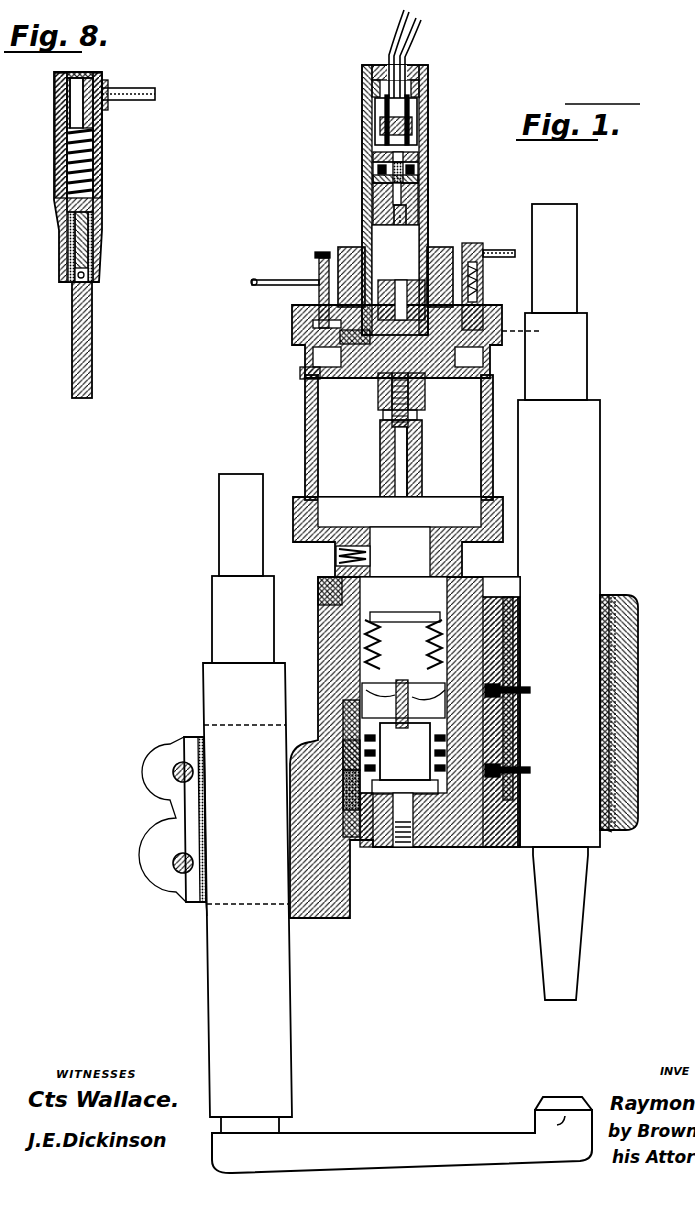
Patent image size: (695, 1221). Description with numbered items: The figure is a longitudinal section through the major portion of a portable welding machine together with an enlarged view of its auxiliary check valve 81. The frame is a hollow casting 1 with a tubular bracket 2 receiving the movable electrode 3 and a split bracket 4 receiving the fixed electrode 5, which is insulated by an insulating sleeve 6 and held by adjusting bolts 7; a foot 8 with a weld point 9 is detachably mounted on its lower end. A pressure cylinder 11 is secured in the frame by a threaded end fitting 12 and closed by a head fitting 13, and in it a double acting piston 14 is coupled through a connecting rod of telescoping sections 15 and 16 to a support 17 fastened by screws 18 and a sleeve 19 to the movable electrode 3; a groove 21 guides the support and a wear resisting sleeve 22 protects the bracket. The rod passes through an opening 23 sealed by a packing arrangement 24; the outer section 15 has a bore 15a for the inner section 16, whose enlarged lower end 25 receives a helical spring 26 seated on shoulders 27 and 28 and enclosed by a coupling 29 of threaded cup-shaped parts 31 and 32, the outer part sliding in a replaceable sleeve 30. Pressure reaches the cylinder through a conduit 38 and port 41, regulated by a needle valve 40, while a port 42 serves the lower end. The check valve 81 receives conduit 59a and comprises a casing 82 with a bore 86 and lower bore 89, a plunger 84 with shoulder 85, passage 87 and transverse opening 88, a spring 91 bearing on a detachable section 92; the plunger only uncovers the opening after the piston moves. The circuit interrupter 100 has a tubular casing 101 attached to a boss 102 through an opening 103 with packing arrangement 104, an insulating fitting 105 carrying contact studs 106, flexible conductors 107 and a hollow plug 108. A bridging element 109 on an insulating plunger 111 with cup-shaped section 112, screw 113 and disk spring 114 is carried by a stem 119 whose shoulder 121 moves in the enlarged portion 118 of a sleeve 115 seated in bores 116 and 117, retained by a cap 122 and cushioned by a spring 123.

In FIG. 1, the hollow casting 1 is at (379, 848).
In FIG. 1, the tubular bracket 2 is at (631, 643).
In FIG. 1, the movable electrode 3 is at (594, 488).
In FIG. 1, the split bracket 4 is at (186, 744).
In FIG. 1, the fixed electrode 5 is at (216, 598).
In FIG. 1, the insulating sleeve 6 is at (203, 911).
In FIG. 1, the adjusting bolts 7 is at (176, 780).
In FIG. 1, the foot 8 is at (408, 1133).
In FIG. 1, the weld point 9 is at (566, 1098).
In FIG. 1, the pressure cylinder 11 is at (305, 419).
In FIG. 1, the threaded end fitting 12 is at (463, 557).
In FIG. 1, the head fitting 13 is at (292, 312).
In FIG. 1, the double acting piston 14 is at (306, 384).
In FIG. 1, the outer section of connecting rod 15 is at (423, 477).
In FIG. 1, the bore 15a is at (418, 452).
In FIG. 1, the inner section of connecting rod 16 is at (423, 495).
In FIG. 1, the support 17 is at (470, 848).
In FIG. 1, the screws 18 is at (519, 766).
In FIG. 1, the sleeve 19 is at (605, 598).
In FIG. 1, the groove 21 is at (500, 600).
In FIG. 1, the wear resisting sleeve 22 is at (607, 833).
In FIG. 1, the opening 23 is at (417, 530).
In FIG. 1, the packing arrangement 24 is at (336, 587).
In FIG. 1, the enlarged lower end 25 is at (417, 766).
In FIG. 1, the helical spring 26 is at (370, 696).
In FIG. 1, the shoulder 27 is at (452, 626).
In FIG. 1, the shoulder 28 is at (350, 791).
In FIG. 1, the coupling 29 is at (513, 650).
In FIG. 1, the sleeve 30 is at (356, 829).
In FIG. 1, the outer cup-shaped part 31 is at (372, 712).
In FIG. 1, the inner cup-shaped part 32 is at (350, 754).
In FIG. 1, the conduit 38 is at (253, 280).
In FIG. 1, the needle valve 40 is at (315, 255).
In FIG. 1, the port 41 is at (313, 300).
In FIG. 1, the port 42 is at (336, 554).
In FIG. 8, the conduit 59a is at (140, 88).
In FIG. 1, the conduit 59a is at (488, 256).
In FIG. 8, the check valve 81 is at (143, 172).
In FIG. 1, the check valve 81 is at (480, 243).
In FIG. 8, the casing 82 is at (101, 130).
In FIG. 8, the plunger 84 is at (92, 287).
In FIG. 8, the shoulder 85 is at (68, 188).
In FIG. 8, the bore 86 is at (60, 137).
In FIG. 8, the passage 87 is at (75, 236).
In FIG. 8, the transverse opening 88 is at (76, 274).
In FIG. 1, the transverse opening 88 is at (535, 332).
In FIG. 8, the bore 89 is at (96, 240).
In FIG. 8, the spring 91 is at (68, 115).
In FIG. 8, the detachable section 92 is at (55, 79).
In FIG. 1, the circuit interrupter 100 is at (497, 73).
In FIG. 1, the tubular casing 101 is at (428, 203).
In FIG. 1, the boss 102 is at (340, 336).
In FIG. 1, the opening 103 is at (313, 324).
In FIG. 1, the packing arrangement 104 is at (340, 251).
In FIG. 1, the cup-shaped insulating fitting 105 is at (418, 126).
In FIG. 1, the contact studs 106 is at (377, 123).
In FIG. 1, the flexible conductors 107 is at (398, 37).
In FIG. 1, the hollow plug 108 is at (420, 72).
In FIG. 1, the contact bridging element 109 is at (419, 160).
In FIG. 1, the plunger 111 is at (376, 183).
In FIG. 1, the cup-shaped section 112 is at (378, 170).
In FIG. 1, the screw 113 is at (385, 198).
In FIG. 1, the disk spring 114 is at (419, 176).
In FIG. 1, the sleeve 115 is at (423, 390).
In FIG. 1, the enlarged bore 116 is at (421, 412).
In FIG. 1, the increased bore 117 is at (383, 402).
In FIG. 1, the enlarged portion of sleeve 118 is at (380, 386).
In FIG. 1, the stem 119 is at (407, 231).
In FIG. 1, the annular shoulder 121 is at (372, 246).
In FIG. 1, the cap 122 is at (402, 252).
In FIG. 1, the spring 123 is at (385, 420).